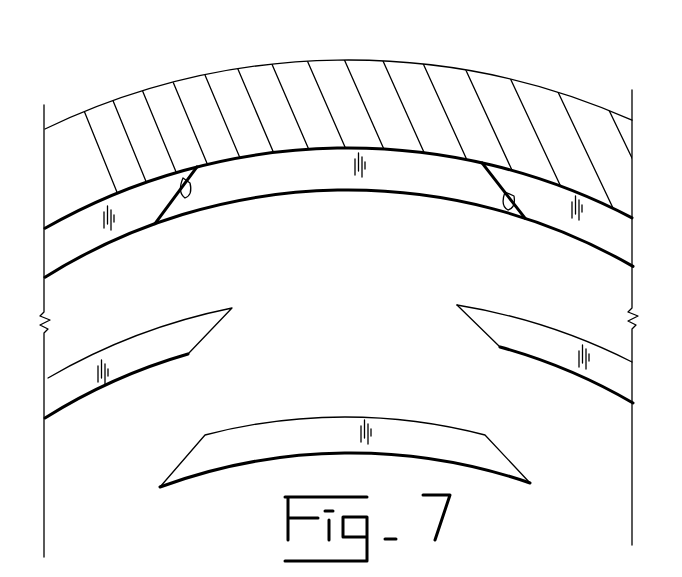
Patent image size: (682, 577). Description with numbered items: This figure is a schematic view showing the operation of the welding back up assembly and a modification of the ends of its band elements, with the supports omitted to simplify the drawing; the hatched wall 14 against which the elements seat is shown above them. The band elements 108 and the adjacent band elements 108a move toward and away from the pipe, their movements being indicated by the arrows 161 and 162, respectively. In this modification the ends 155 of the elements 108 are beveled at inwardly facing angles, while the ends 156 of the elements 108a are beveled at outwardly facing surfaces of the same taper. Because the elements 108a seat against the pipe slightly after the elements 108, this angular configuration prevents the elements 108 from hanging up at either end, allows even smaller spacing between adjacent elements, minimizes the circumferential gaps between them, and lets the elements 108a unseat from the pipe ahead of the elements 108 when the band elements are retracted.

The housing wall 14 is at (417, 63).
The band element 108 is at (140, 230).
The band element 108a is at (281, 420).
The end of element 108 155 is at (187, 192).
The end of element 108a 156 is at (167, 205).
The arrow 161 is at (137, 327).
The arrow 162 is at (337, 197).